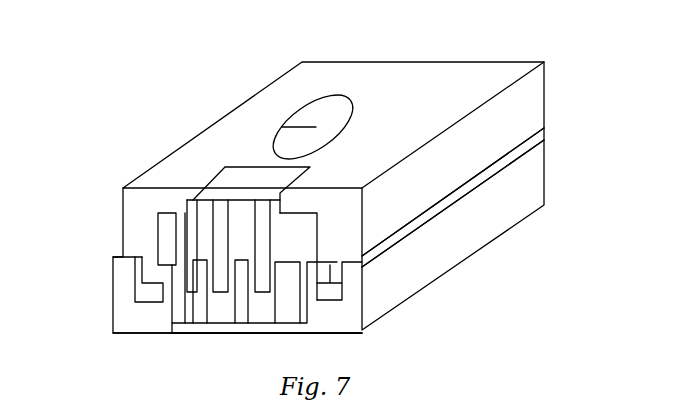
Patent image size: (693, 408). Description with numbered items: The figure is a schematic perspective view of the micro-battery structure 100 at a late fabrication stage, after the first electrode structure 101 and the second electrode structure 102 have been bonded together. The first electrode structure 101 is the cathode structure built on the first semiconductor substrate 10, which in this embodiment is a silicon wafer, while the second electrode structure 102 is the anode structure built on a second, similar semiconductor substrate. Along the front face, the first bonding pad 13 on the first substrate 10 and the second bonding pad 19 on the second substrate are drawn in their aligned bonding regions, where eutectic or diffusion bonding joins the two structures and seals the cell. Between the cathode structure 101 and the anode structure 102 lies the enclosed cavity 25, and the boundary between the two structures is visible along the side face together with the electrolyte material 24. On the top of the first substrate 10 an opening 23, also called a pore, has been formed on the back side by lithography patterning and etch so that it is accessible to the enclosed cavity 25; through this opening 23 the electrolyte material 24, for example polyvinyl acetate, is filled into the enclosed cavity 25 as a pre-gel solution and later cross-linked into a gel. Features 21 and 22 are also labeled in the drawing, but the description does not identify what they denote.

The micro-battery structure 100 is at (610, 48).
The first semiconductor substrate 10 is at (544, 80).
The first electrode structure 101 is at (123, 216).
The second electrode structure 102 is at (105, 312).
The first bonding pad 13 is at (138, 283).
The second bonding pad 19 is at (138, 300).
The opening 21 is at (220, 178).
The bottom contact 22 is at (222, 335).
The opening 23 is at (290, 122).
The electrolyte material 24 is at (302, 223).
The enclosed cavity 25 is at (330, 270).